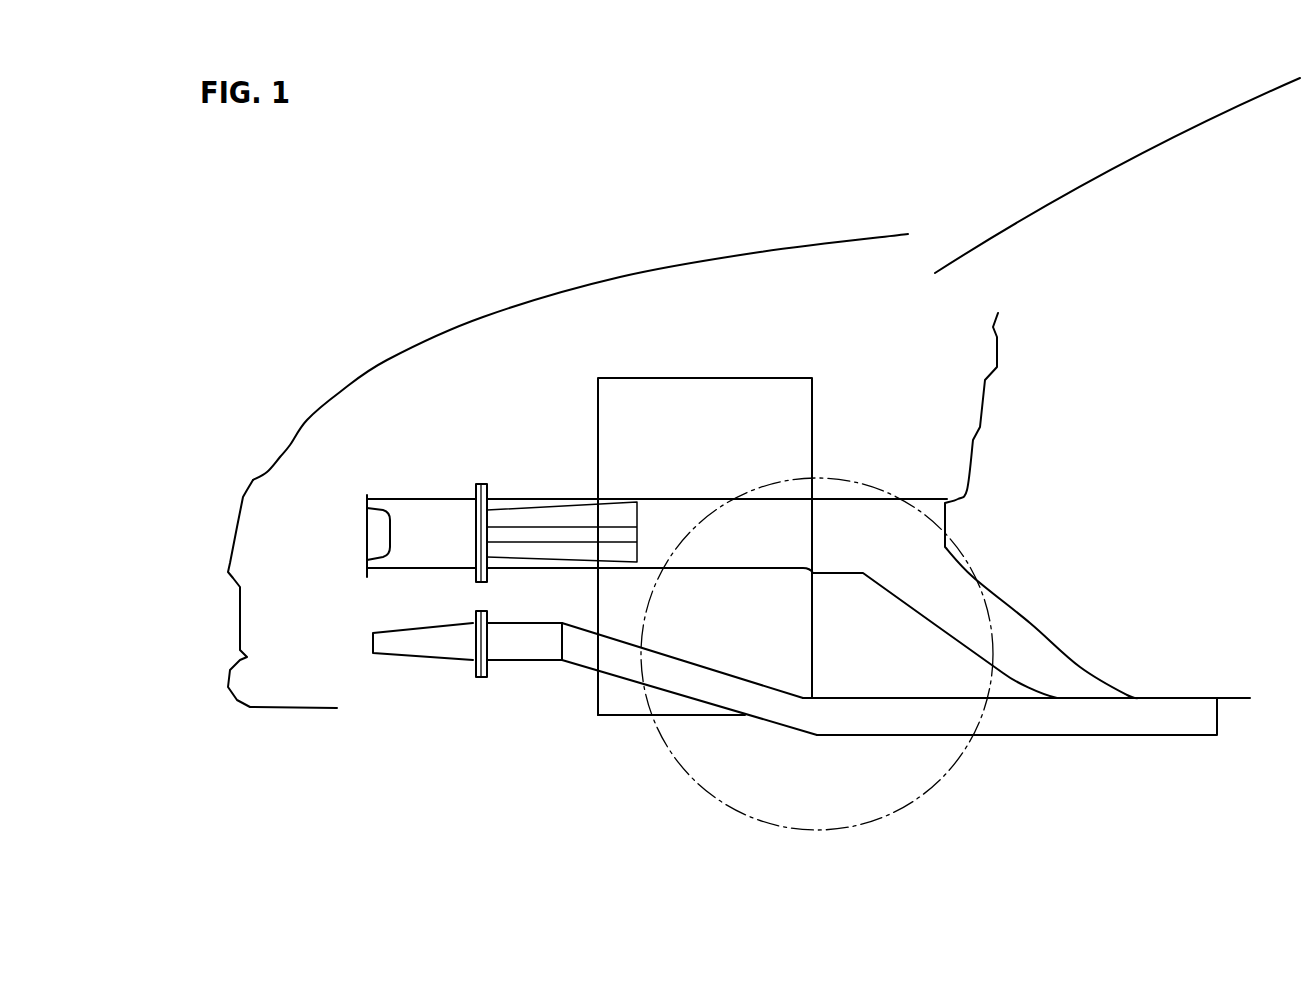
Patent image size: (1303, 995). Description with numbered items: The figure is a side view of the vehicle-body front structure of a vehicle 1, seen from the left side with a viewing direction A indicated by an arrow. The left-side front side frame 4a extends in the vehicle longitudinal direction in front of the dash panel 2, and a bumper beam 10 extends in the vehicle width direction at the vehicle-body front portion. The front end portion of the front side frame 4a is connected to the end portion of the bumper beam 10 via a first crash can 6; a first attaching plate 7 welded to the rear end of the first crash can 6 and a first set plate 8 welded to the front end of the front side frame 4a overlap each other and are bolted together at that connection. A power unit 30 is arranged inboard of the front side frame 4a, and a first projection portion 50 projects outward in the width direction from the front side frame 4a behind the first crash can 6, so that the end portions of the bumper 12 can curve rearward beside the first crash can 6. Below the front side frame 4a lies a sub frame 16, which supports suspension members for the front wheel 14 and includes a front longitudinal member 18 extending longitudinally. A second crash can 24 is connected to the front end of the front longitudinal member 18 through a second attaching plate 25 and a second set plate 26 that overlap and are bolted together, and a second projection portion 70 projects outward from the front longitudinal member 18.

The vehicle 1 is at (467, 196).
The dash panel 2 is at (980, 428).
The left-side front side frame 4a is at (830, 498).
The first crash can 6 is at (402, 510).
The first attaching plate 7 is at (475, 492).
The first set plate 8 is at (488, 492).
The bumper beam 10 is at (367, 517).
The bumper 12 is at (240, 498).
The front wheel 14 is at (662, 742).
The sub frame 16 is at (1004, 737).
The front longitudinal member 18 is at (707, 690).
The second crash can 24 is at (398, 640).
The second attaching plate 25 is at (474, 668).
The second set plate 26 is at (490, 668).
The power unit 30 is at (788, 378).
The first projection portion 50 is at (563, 507).
The second projection portion 70 is at (547, 630).
The viewing direction A is at (663, 301).